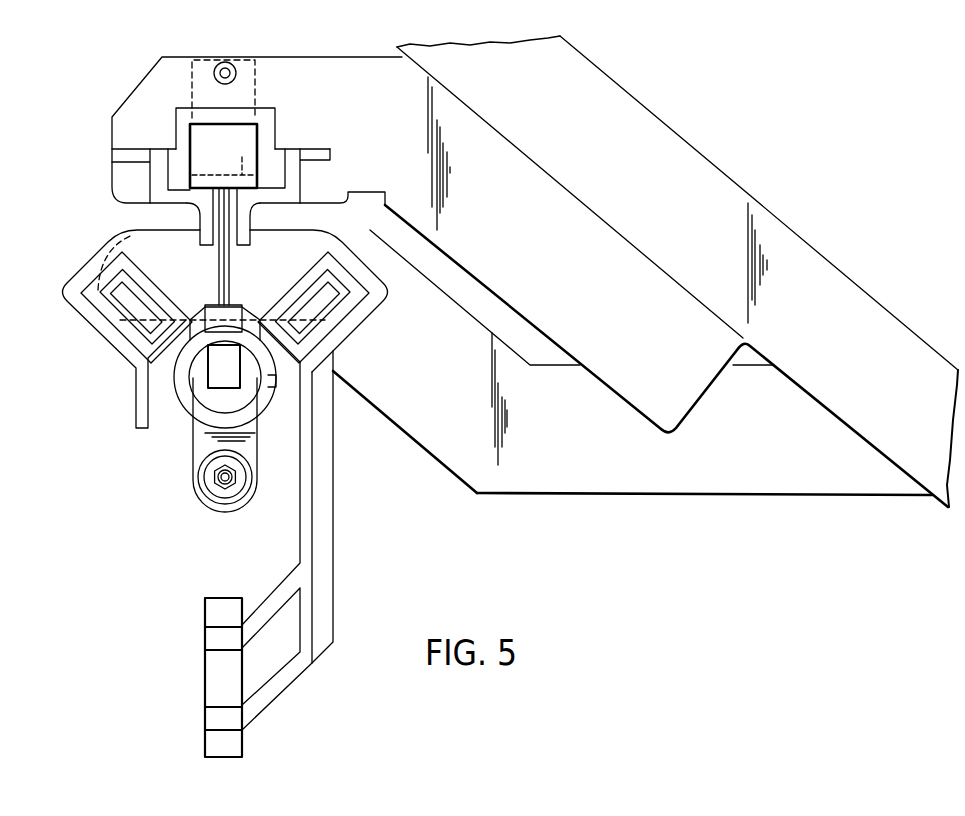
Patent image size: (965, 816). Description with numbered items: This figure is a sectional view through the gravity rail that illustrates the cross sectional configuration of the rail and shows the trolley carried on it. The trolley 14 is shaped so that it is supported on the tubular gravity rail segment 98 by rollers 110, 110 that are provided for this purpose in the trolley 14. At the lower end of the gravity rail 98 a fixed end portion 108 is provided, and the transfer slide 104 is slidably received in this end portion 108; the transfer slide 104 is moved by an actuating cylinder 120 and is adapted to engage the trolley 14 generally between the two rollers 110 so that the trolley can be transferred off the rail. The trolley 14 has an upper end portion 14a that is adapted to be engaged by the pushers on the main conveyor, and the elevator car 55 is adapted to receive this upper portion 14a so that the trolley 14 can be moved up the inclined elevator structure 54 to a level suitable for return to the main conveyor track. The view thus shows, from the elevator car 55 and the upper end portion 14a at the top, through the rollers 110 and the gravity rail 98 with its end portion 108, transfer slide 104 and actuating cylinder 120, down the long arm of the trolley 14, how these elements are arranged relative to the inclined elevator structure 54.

The elevator car 55 is at (151, 70).
The upper end portion 14a is at (245, 167).
The inclined elevator structure 54 is at (731, 179).
The rollers 110 is at (138, 337).
The transfer slide 104 is at (195, 365).
The gravity rail 98 is at (184, 399).
The fixed end portion 108 is at (218, 356).
The actuating cylinder 120 is at (252, 470).
The trolley 14 is at (334, 466).